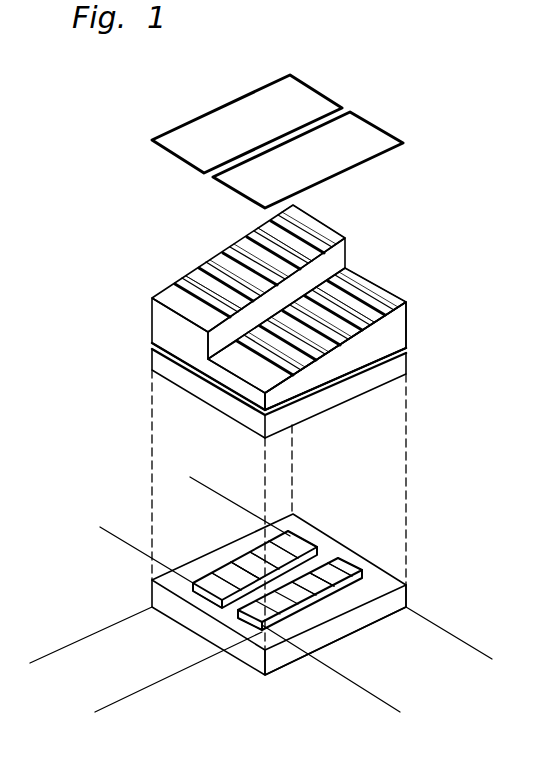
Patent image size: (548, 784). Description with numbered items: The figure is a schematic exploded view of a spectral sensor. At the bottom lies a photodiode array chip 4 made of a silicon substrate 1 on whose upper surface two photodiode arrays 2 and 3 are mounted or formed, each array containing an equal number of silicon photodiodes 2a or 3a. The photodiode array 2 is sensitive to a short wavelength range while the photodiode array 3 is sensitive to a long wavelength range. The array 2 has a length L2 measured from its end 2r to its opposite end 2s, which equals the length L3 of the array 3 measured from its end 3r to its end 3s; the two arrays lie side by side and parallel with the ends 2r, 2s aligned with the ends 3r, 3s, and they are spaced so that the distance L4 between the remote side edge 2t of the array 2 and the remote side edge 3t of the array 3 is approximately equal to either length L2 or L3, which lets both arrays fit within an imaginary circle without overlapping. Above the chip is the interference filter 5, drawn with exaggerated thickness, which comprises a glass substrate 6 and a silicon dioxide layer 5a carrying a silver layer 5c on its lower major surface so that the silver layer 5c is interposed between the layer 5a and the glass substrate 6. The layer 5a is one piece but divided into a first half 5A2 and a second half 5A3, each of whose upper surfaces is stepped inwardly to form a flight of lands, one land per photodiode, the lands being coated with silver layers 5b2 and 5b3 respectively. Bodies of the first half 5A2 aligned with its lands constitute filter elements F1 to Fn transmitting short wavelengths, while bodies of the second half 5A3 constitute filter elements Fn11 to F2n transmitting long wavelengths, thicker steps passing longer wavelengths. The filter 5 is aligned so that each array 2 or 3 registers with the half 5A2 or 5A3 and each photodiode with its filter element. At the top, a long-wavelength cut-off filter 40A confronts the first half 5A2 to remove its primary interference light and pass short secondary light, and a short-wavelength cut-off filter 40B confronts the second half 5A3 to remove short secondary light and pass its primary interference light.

The silicon substrate 1 is at (406, 586).
The photodiode array 2 is at (242, 624).
The silicon photodiode 2a is at (329, 578).
The end of photodiode array 2r is at (258, 632).
The end of photodiode array 2s is at (372, 557).
The side edge of photodiode array 2t is at (312, 606).
The photodiode array 3 is at (188, 592).
The silicon photodiode 3a is at (249, 566).
The end of photodiode array 3r is at (205, 597).
The end of photodiode array 3s is at (283, 553).
The side edge of photodiode array 3t is at (218, 564).
The photodiode array chip 4 is at (372, 631).
The interference filter 5 is at (128, 305).
The silicon dioxide layer 5a is at (420, 304).
The silver layer 5b2 is at (378, 302).
The silver layer 5b3 is at (312, 232).
The silver layer 5c is at (412, 351).
The first half 5A2 is at (312, 312).
The second half 5A3 is at (215, 262).
The glass substrate 6 is at (412, 372).
The long-wavelength light cut-off filter 40A is at (385, 148).
The short-wavelength light cut-off filter 40B is at (325, 93).
The filter element F1 is at (262, 378).
The filter element Fn is at (352, 302).
The filter element Fn11 is at (195, 320).
The filter element F2n is at (268, 240).
The length of photodiode array L2 is at (465, 645).
The length of photodiode array L3 is at (205, 490).
The distance between side edges L4 is at (116, 702).